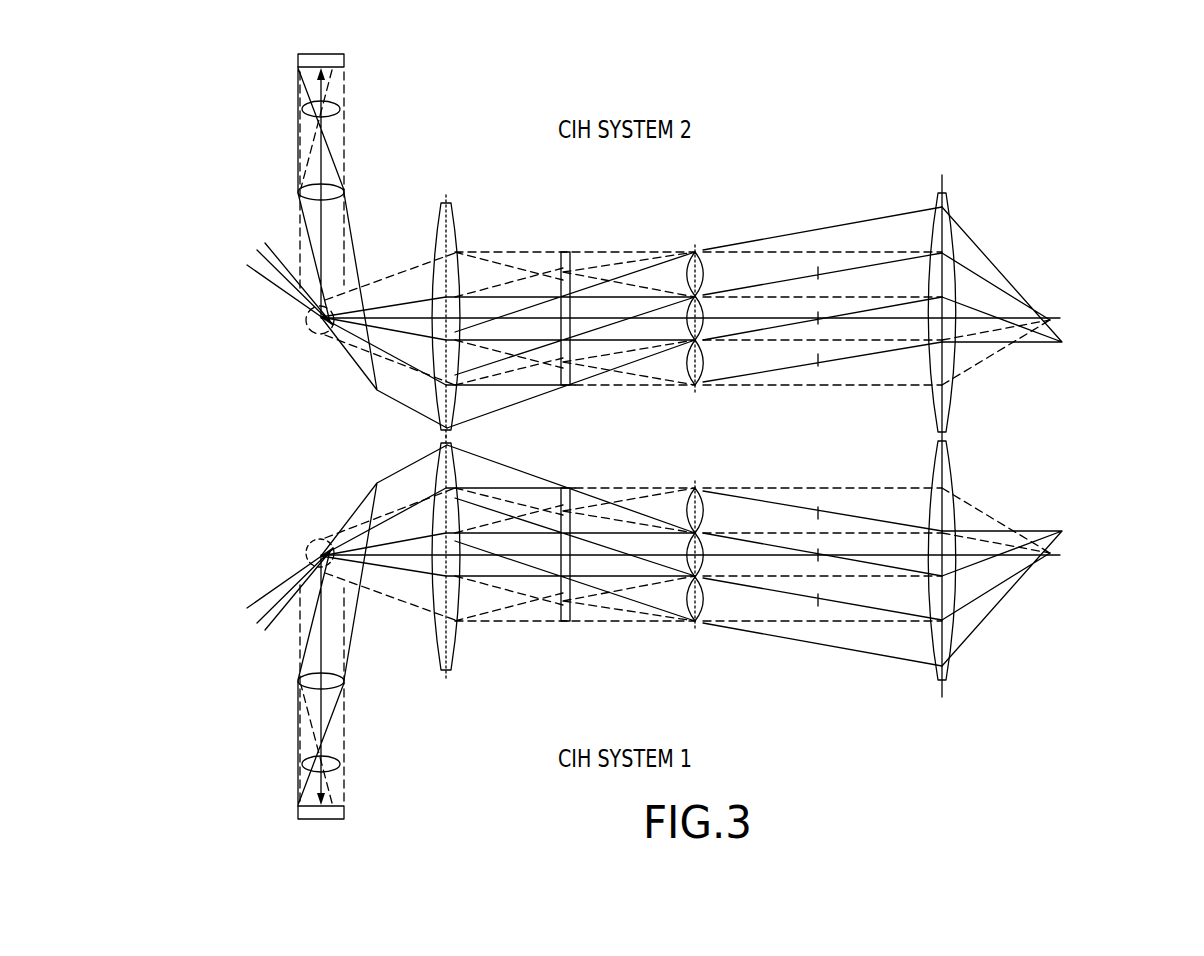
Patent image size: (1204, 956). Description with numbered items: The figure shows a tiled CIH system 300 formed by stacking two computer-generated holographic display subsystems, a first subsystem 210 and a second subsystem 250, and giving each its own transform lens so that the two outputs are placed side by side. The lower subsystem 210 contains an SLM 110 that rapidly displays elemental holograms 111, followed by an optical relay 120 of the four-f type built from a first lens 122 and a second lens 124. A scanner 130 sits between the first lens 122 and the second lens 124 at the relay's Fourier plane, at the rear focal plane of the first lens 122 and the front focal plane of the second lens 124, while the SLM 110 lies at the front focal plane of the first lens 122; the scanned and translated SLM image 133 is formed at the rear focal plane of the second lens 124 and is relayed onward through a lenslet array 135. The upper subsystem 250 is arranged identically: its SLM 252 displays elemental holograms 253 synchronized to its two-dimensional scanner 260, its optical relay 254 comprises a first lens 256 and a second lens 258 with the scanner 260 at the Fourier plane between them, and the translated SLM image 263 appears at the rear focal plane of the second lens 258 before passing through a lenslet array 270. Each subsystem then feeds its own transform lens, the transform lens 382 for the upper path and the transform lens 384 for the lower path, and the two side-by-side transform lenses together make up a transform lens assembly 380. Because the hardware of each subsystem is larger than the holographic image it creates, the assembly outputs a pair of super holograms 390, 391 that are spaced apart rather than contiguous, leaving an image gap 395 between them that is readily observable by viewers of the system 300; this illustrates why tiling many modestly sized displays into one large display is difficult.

The SLM 110 is at (273, 814).
The elemental holograms 111 is at (302, 765).
The optical relay 120 is at (379, 612).
The first lens 122 is at (358, 682).
The second lens 124 is at (432, 677).
The scanner 130 is at (294, 525).
The SLM image 133 is at (577, 640).
The lenslet array 135 is at (701, 643).
The subsystem 210 is at (254, 672).
The second subsystem 250 is at (254, 203).
The SLM 252 is at (276, 59).
The elemental holograms 253 is at (302, 109).
The optical relay 254 is at (385, 257).
The first lens 256 is at (359, 186).
The second lens 258 is at (434, 189).
The scanner 260 is at (297, 347).
The SLM image 263 is at (575, 232).
The lenslet array 270 is at (704, 234).
The tiled CIH system 300 is at (1120, 134).
The transform lens assembly 380 is at (982, 175).
The transform lens 382 is at (930, 206).
The transform lens 384 is at (953, 479).
The super hologram 390 is at (1069, 304).
The super hologram 391 is at (1058, 565).
The image gap 395 is at (1115, 471).